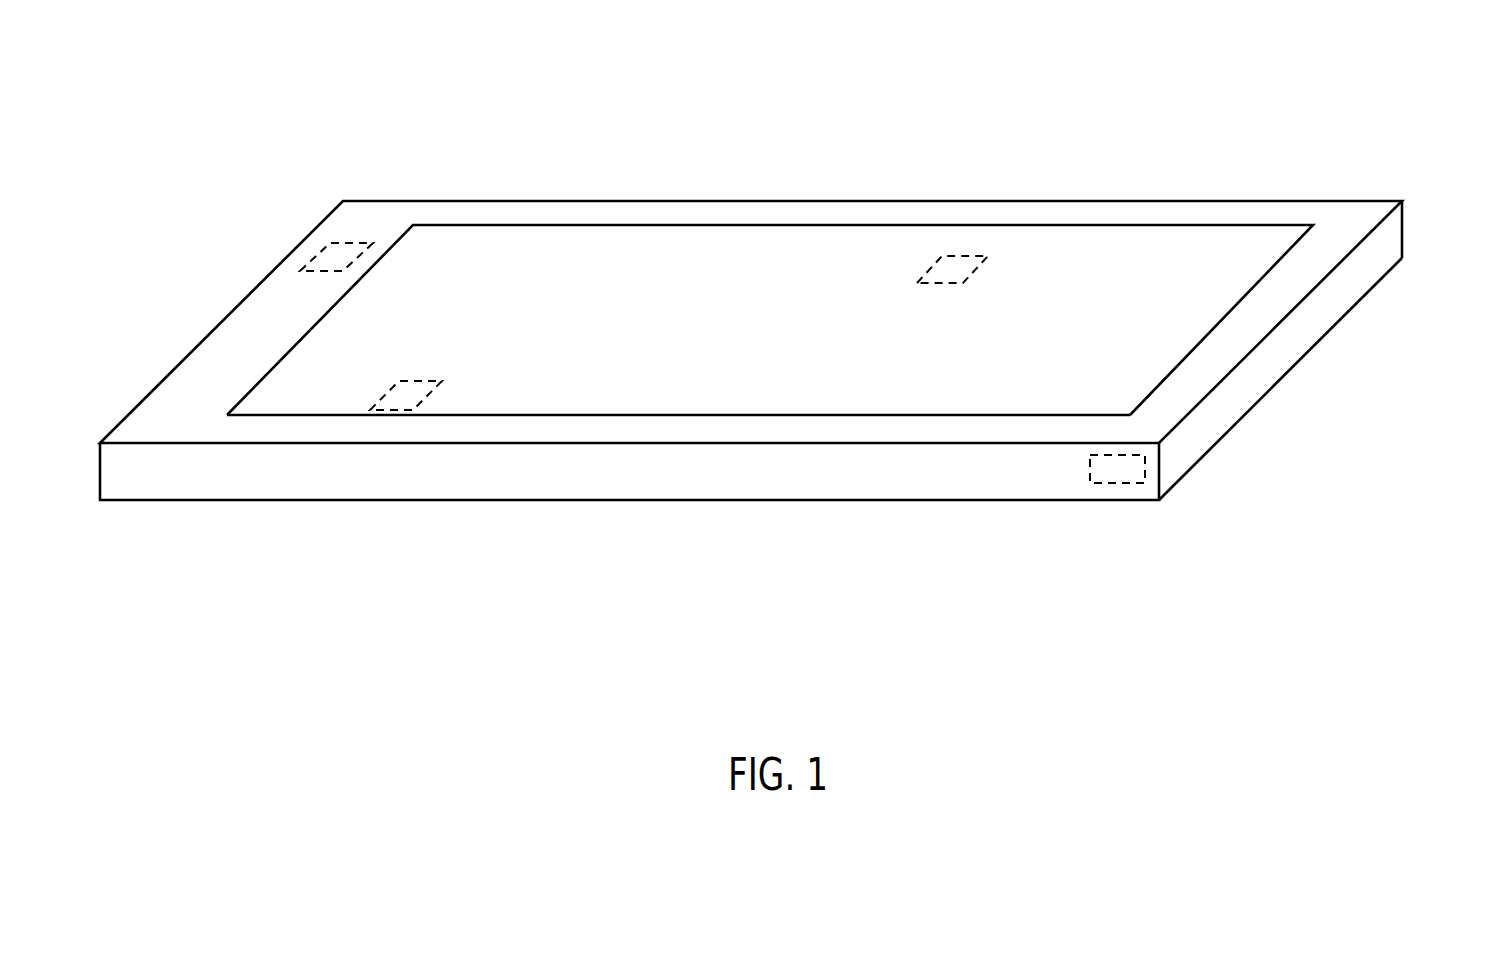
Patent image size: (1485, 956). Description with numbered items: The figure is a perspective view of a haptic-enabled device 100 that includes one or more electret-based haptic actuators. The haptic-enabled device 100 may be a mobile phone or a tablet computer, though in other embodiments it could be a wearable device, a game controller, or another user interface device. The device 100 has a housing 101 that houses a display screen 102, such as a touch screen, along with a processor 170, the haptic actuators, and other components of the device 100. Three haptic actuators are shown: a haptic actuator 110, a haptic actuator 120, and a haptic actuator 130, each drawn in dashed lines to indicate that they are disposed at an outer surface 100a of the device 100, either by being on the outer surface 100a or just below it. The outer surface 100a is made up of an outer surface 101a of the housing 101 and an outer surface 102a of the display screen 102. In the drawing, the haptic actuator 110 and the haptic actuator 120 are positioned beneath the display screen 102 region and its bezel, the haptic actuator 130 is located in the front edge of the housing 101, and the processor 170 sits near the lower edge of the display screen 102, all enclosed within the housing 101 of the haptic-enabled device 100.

The haptic-enabled device 100 is at (1118, 162).
The outer surface 100a is at (1232, 310).
The housing 101 is at (1403, 202).
The outer surface of the housing 101a is at (1165, 408).
The display screen 102 is at (708, 243).
The outer surface of the display screen 102a is at (1035, 387).
The haptic actuator 110 is at (327, 273).
The haptic actuator 120 is at (943, 285).
The haptic actuator 130 is at (1113, 484).
The processor 170 is at (397, 410).